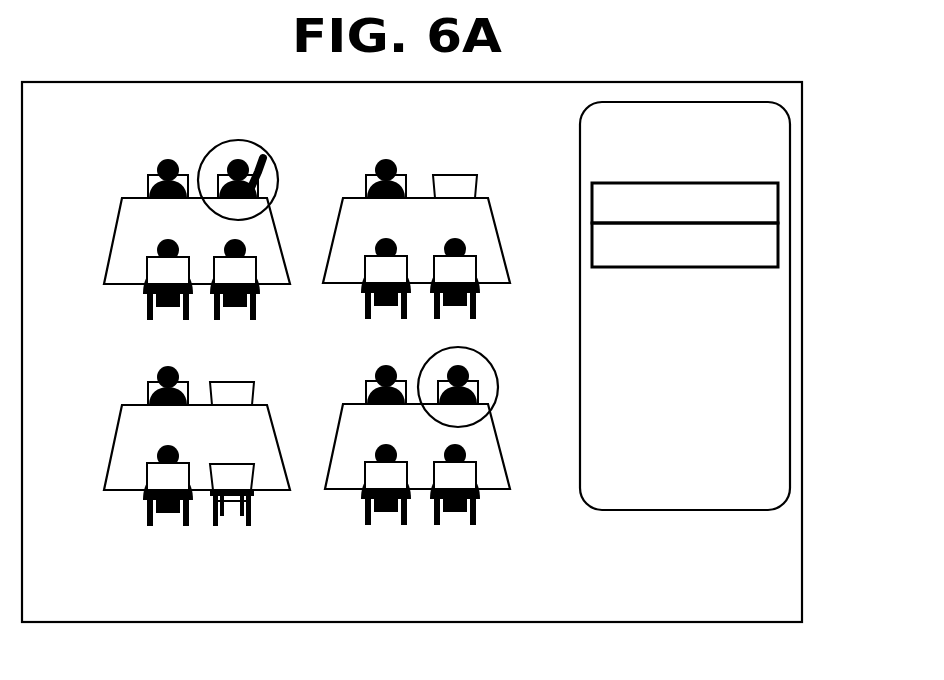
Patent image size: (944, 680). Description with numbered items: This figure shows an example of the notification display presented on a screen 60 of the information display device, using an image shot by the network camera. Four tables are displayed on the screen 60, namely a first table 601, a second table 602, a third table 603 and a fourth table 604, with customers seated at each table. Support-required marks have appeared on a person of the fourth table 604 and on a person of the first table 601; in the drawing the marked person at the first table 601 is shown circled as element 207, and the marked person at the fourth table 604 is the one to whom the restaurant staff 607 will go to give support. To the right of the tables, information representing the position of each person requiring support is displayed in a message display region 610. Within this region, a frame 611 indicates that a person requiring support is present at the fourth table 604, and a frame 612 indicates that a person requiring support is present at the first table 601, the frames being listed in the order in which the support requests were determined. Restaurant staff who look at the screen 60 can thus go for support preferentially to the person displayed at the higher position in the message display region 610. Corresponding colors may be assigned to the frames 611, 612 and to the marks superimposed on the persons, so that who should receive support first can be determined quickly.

The screen 60 is at (532, 82).
The person raising hand (support request) 207 is at (243, 142).
The first table 601 is at (127, 225).
The second table 602 is at (485, 223).
The third table 603 is at (127, 437).
The fourth table 604 is at (487, 447).
The restaurant staff 607 is at (487, 358).
The message display region 610 is at (730, 102).
The frame 611 is at (778, 203).
The frame 612 is at (778, 243).